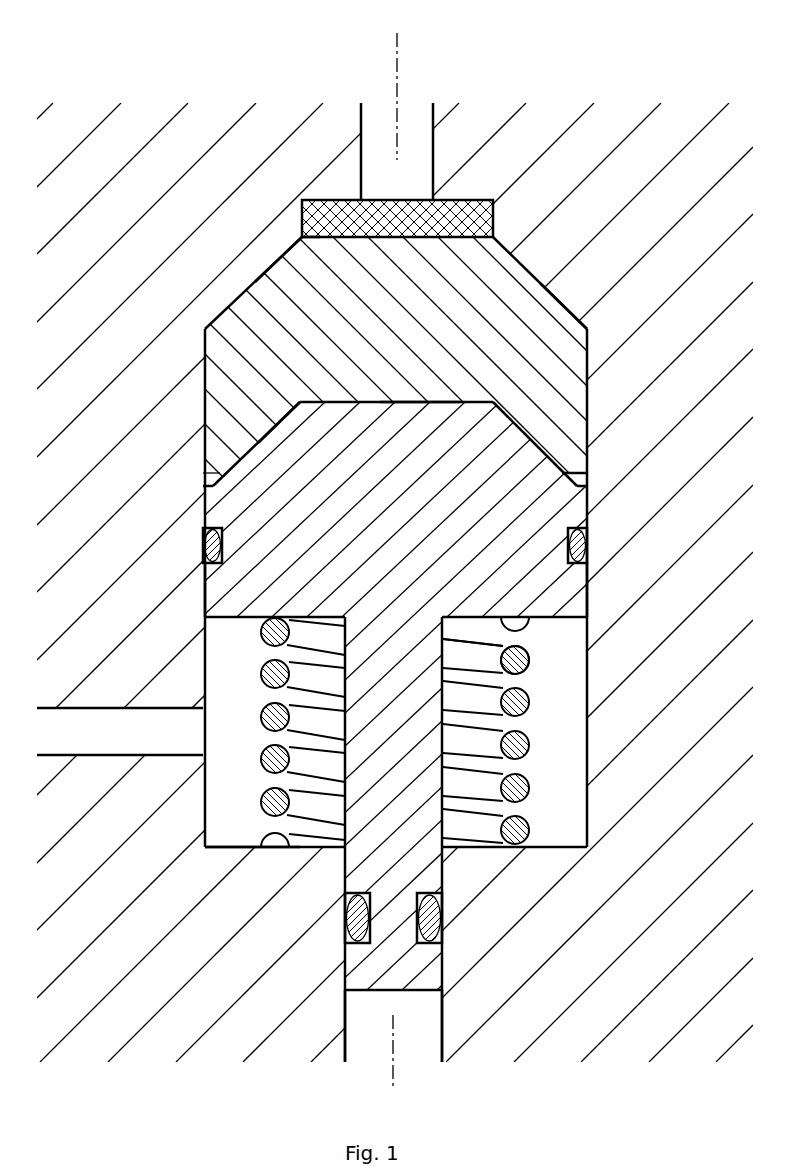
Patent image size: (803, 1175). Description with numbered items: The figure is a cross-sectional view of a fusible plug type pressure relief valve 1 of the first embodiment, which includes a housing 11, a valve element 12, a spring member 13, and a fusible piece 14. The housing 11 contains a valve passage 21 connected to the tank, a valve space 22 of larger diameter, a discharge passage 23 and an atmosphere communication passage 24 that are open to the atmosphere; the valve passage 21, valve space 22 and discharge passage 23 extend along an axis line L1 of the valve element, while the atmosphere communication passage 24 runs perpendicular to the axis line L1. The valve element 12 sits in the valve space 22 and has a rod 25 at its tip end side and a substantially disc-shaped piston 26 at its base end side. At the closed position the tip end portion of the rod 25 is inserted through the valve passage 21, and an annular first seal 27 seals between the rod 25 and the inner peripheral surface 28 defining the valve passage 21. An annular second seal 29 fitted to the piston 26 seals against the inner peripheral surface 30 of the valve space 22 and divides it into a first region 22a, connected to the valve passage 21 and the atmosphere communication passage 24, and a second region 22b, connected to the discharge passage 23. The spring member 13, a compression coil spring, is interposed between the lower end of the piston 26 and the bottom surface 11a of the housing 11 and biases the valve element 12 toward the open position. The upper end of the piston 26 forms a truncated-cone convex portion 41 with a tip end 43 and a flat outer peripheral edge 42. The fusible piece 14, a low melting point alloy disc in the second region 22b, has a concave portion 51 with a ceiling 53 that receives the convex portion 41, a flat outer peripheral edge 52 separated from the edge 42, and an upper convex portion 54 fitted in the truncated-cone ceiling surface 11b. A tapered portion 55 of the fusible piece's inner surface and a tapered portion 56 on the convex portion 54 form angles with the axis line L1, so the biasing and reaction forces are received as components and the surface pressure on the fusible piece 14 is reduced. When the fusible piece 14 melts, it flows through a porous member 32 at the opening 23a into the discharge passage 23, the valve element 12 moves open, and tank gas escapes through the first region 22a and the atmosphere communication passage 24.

The fusible plug type pressure relief valve 1 is at (687, 83).
The housing 11 is at (573, 118).
The bottom surface 11a is at (247, 847).
The ceiling surface 11b is at (545, 287).
The valve element 12 is at (423, 763).
The spring member 13 is at (520, 830).
The fusible piece 14 is at (578, 362).
The valve passage 21 is at (438, 1005).
The valve space 22 is at (152, 575).
The first region 22a is at (203, 663).
The second region 22b is at (206, 488).
The discharge passage 23 is at (427, 142).
The opening 23a is at (490, 222).
The atmosphere communication passage 24 is at (165, 755).
The rod 25 is at (427, 692).
The piston 26 is at (475, 605).
The first seal 27 is at (445, 908).
The inner peripheral surface 28 is at (440, 945).
The second seal 29 is at (588, 538).
The inner peripheral surface 30 is at (580, 573).
The porous member 32 is at (305, 232).
The convex portion 41 is at (513, 438).
The outer peripheral edge 42 is at (575, 483).
The tip end 43 is at (362, 400).
The concave portion 51 is at (500, 413).
The outer peripheral edge 52 is at (587, 473).
The ceiling 53 is at (405, 407).
The convex portion 54 is at (556, 312).
The tapered portion 55 is at (275, 432).
The tapered portion 56 is at (240, 303).
The axis line L1 is at (398, 63).